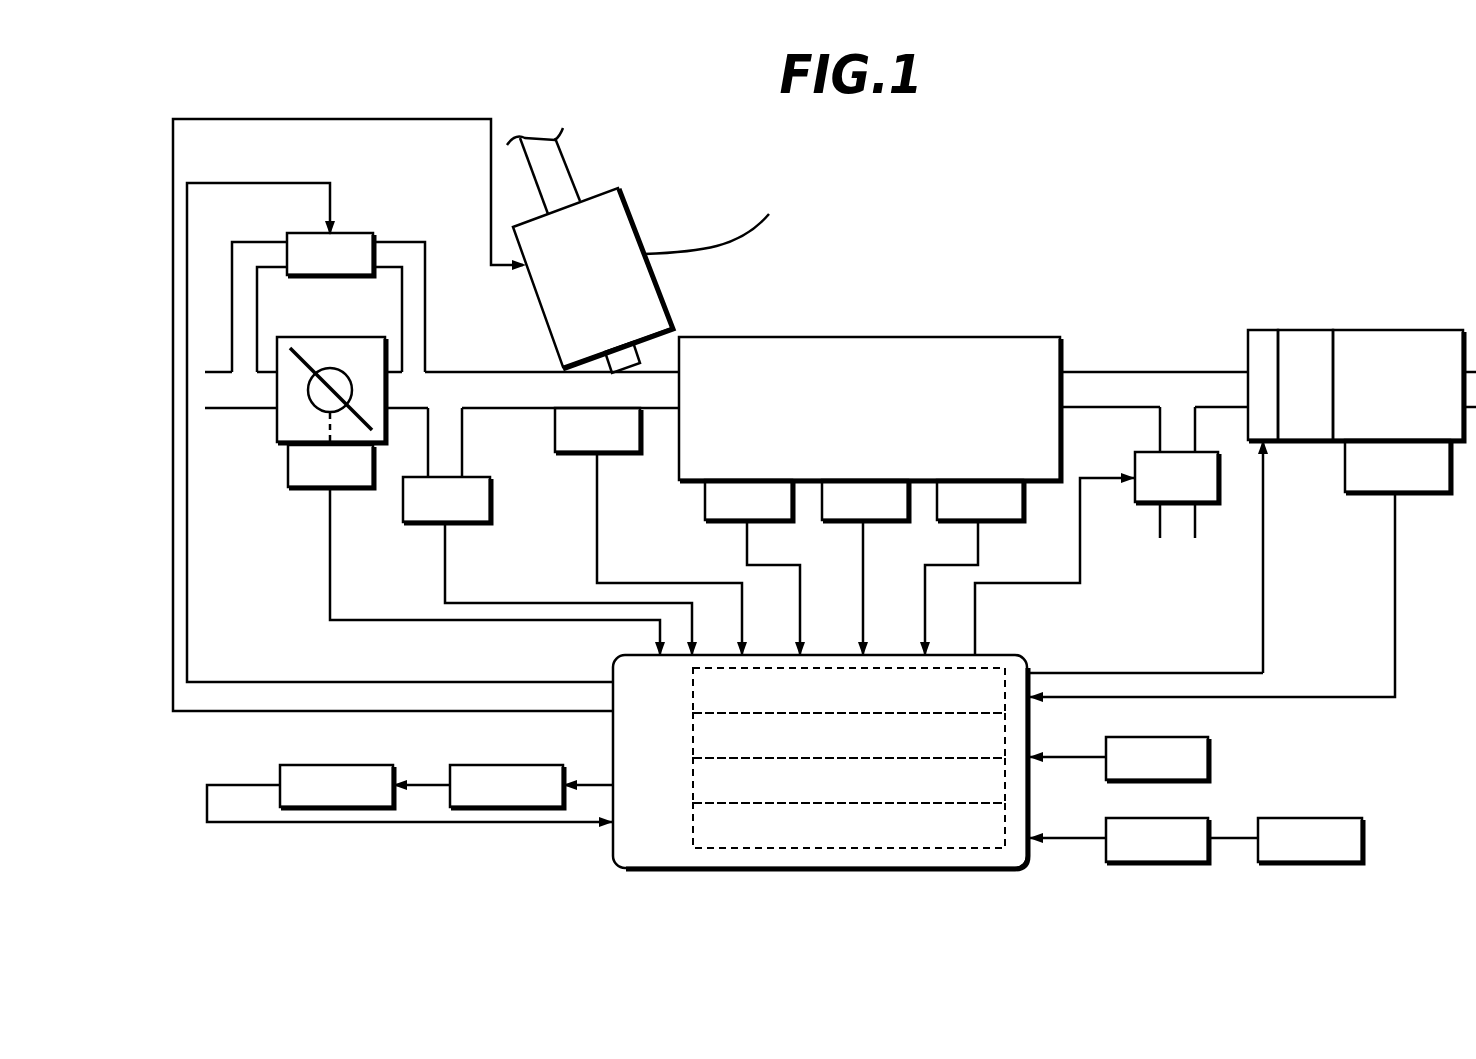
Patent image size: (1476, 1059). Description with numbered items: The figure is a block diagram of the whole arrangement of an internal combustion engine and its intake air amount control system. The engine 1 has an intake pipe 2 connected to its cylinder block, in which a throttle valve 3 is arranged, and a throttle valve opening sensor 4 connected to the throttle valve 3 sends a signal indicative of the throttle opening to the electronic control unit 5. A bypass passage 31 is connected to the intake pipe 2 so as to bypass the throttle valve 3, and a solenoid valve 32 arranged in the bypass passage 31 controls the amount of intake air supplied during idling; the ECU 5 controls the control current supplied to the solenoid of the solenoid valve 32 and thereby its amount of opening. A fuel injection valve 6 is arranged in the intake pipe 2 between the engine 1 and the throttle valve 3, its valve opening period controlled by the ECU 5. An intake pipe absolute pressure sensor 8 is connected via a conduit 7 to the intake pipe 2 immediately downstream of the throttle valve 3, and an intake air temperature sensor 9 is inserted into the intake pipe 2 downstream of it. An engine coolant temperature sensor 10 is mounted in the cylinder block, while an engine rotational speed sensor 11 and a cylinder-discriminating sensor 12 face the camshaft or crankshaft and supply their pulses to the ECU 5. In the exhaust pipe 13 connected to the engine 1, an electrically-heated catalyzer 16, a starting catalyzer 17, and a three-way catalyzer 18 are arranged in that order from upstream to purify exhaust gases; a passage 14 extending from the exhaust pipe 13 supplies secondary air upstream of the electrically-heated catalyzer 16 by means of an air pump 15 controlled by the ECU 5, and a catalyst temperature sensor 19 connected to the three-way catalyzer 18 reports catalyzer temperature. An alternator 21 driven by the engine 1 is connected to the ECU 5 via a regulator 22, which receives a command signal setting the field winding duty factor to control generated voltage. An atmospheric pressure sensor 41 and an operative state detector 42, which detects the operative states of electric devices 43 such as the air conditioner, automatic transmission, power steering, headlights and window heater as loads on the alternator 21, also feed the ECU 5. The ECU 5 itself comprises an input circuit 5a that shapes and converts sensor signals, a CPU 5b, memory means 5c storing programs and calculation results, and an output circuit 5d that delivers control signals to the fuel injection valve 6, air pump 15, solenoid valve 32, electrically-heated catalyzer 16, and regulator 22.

The internal combustion engine 1 is at (1000, 337).
The intake pipe 2 is at (517, 371).
The throttle valve 3 is at (312, 355).
The throttle valve opening (θTH) sensor 4 is at (355, 489).
The electronic control unit (ECU) 5 is at (885, 761).
The input circuit 5a is at (1005, 668).
The central processing unit (CPU) 5b is at (1005, 745).
The memory means 5c is at (1005, 775).
The output circuit 5d is at (1005, 848).
The fuel injection valve 6 is at (600, 190).
The conduit 7 is at (465, 430).
The intake pipe absolute pressure (PBA) sensor 8 is at (463, 525).
The intake air temperature (TA) sensor 9 is at (600, 455).
The engine coolant temperature (TW) sensor 10 is at (708, 523).
The engine rotational speed (NE) sensor 11 is at (880, 522).
The cylinder-discriminating (CYL) sensor 12 is at (1000, 522).
The exhaust pipe 13 is at (1070, 367).
The passage 14 is at (1200, 435).
The air pump 15 is at (1145, 450).
The electrically-heated catalyzer (EHC) 16 is at (1260, 328).
The starting catalyzer 17 is at (1305, 328).
The three-way catalyzer 18 is at (1385, 328).
The catalyst temperature sensor 19 is at (1365, 493).
The alternator 21 is at (358, 765).
The regulator 22 is at (523, 765).
The bypass passage 31 is at (425, 325).
The solenoid valve 32 is at (342, 232).
The atmospheric pressure sensor 41 is at (1212, 745).
The operative state detector 42 is at (1190, 815).
The electric devices 43 is at (1290, 815).